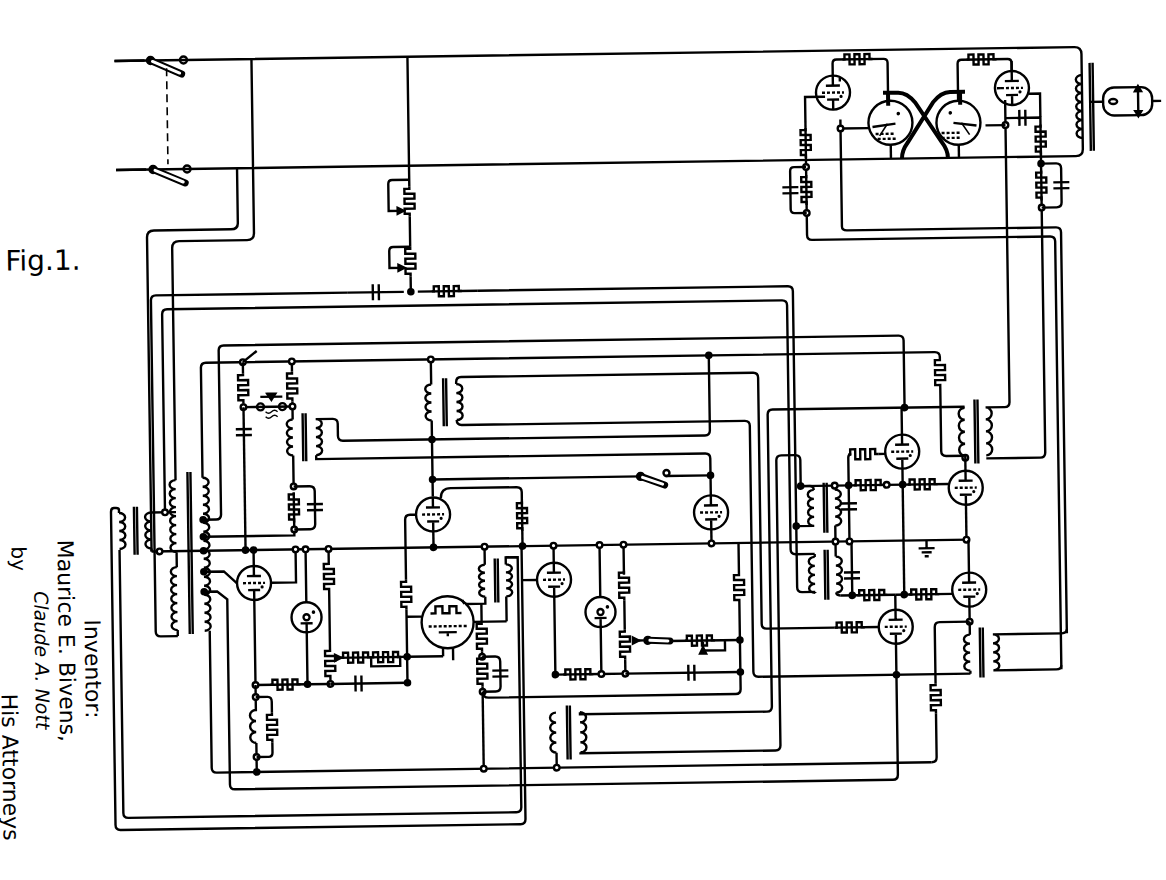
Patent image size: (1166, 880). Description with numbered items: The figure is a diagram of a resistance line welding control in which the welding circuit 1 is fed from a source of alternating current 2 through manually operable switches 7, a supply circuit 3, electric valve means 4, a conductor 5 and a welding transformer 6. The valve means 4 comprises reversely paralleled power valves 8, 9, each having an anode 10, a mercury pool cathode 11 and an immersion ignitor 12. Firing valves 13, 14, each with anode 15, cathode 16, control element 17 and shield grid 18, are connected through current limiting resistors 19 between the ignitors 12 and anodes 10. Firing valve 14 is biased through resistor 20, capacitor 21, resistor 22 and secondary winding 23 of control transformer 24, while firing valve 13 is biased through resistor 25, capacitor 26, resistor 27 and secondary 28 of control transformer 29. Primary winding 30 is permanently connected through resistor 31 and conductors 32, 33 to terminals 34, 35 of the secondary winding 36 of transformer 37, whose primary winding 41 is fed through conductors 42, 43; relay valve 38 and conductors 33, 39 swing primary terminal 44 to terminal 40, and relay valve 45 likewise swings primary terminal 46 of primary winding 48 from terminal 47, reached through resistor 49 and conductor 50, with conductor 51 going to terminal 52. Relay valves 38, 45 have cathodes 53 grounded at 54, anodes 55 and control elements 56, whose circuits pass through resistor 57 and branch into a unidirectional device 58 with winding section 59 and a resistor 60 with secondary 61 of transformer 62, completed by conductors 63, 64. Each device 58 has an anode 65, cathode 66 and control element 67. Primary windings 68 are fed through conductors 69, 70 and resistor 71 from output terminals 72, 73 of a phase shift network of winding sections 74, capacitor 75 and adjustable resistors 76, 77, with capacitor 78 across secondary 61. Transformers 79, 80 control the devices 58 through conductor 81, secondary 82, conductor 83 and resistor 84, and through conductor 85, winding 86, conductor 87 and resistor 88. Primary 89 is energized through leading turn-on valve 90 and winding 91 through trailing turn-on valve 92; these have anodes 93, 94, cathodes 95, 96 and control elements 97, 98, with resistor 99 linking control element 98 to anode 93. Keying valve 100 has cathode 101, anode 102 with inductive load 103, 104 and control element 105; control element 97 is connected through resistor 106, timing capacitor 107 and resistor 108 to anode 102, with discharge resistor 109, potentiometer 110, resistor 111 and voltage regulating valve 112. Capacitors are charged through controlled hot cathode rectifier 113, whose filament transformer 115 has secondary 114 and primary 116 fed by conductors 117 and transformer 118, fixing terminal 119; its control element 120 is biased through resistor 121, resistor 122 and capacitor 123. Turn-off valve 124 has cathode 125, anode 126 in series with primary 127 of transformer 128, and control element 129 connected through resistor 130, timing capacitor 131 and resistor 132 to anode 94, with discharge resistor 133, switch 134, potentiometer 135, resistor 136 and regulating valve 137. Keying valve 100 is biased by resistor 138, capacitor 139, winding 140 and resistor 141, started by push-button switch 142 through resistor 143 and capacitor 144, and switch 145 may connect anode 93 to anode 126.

The welding circuit 1 is at (1128, 94).
The source of alternating current 2 is at (131, 54).
The supply circuit 3 is at (597, 54).
The electric valve means 4 is at (932, 103).
The conductor 5 is at (992, 170).
The welding transformer 6 is at (1101, 160).
The manually operable switches 7 is at (184, 68).
The electric power valve 8 is at (884, 110).
The electric power valve 9 is at (968, 112).
The anode 10 is at (924, 113).
The mercury pool cathode 11 is at (922, 139).
The immersion ignitor-type control element 12 is at (990, 140).
The firing electric valve 13 is at (826, 88).
The firing electric valve 14 is at (1026, 86).
The anode 15 is at (1020, 60).
The cathode 16 is at (810, 110).
The control element 17 is at (824, 92).
The shield grid 18 is at (1004, 90).
The current limiting resistor 19 is at (966, 64).
The current limiting resistor 20 is at (1050, 132).
The capacitor 21 is at (1072, 190).
The resistor 22 is at (1038, 190).
The secondary winding 23 is at (992, 430).
The control transformer 24 is at (977, 404).
The current limiting resistor 25 is at (805, 143).
The capacitor 26 is at (790, 192).
The resistor 27 is at (816, 196).
The secondary winding 28 is at (1000, 656).
The control transformer 29 is at (985, 643).
The primary winding 30 is at (961, 440).
The resistor 31 is at (950, 378).
The conductor 32 is at (384, 357).
The conductor 33 is at (840, 340).
The terminal 34 is at (208, 474).
The terminal 35 is at (210, 514).
The secondary winding 36 is at (208, 490).
The transformer 37 is at (188, 464).
The relay electric valve 38 is at (983, 494).
The conductor 39 is at (584, 545).
The terminal 40 is at (208, 547).
The primary winding 41 is at (172, 626).
The conductor 42 is at (213, 269).
The conductor 43 is at (175, 226).
The primary terminal 44 is at (969, 466).
The relay electric valve 45 is at (976, 584).
The primary terminal 46 is at (962, 630).
The terminal 47 is at (200, 634).
The primary winding 48 is at (962, 663).
The resistor 49 is at (942, 702).
The conductor 50 is at (848, 767).
The conductor 51 is at (896, 694).
The terminal 52 is at (215, 590).
The cathode 53 is at (970, 576).
The ground 54 is at (938, 547).
The anode 55 is at (975, 484).
The control element 56 is at (976, 505).
The current limiting resistor 57 is at (926, 484).
The unidirectional current conducting device 58 is at (910, 446).
The winding section 59 is at (208, 532).
The resistor 60 is at (872, 492).
The secondary winding 61 is at (835, 488).
The transformer 62 is at (812, 488).
The conductor 63 is at (886, 534).
The conductor 64 is at (903, 574).
The anode 65 is at (896, 462).
The cathode 66 is at (898, 434).
The control element 67 is at (886, 452).
The primary winding 68 is at (800, 606).
The conductor 69 is at (616, 289).
The conductor 70 is at (618, 305).
The resistor 71 is at (462, 287).
The output terminal 72 is at (417, 288).
The output terminal 73 is at (162, 503).
The winding sections 74 is at (172, 476).
The capacitor 75 is at (374, 284).
The adjustable resistor 76 is at (420, 253).
The adjustable resistor 77 is at (420, 193).
The capacitor 78 is at (854, 510).
The transformer 79 is at (445, 378).
The transformer 80 is at (570, 754).
The conductor 81 is at (574, 422).
The secondary winding 82 is at (464, 400).
The conductor 83 is at (656, 376).
The current limiting resistor 84 is at (810, 634).
The conductor 85 is at (850, 410).
The primary winding 86 is at (583, 724).
The conductor 87 is at (746, 753).
The current limiting resistor 88 is at (848, 455).
The primary winding 89 is at (424, 404).
The leading turn-on electric valve 90 is at (450, 510).
The secondary winding 91 is at (546, 720).
The trailing turn-on electric valve 92 is at (556, 590).
The anode 93 is at (421, 497).
The anode 94 is at (544, 588).
The cathode 95 is at (440, 521).
The cathode 96 is at (558, 568).
The control element 97 is at (447, 500).
The control element 98 is at (566, 582).
The current limiting resistor 99 is at (528, 506).
The keying electric valve 100 is at (256, 596).
The cathode 101 is at (258, 568).
The anode 102 is at (264, 586).
The inductive load 103 is at (250, 740).
The inductive load 104 is at (278, 726).
The control element 105 is at (268, 576).
The current limiting resistor 106 is at (398, 594).
The timing capacitor 107 is at (354, 688).
The resistor 108 is at (292, 684).
The adjustable discharge resistor 109 is at (374, 648).
The adjustable potentiometer 110 is at (334, 646).
The resistor 111 is at (334, 564).
The voltage regulating valve 112 is at (300, 624).
The controlled hot cathode rectifier 113 is at (442, 592).
The secondary winding 114 is at (478, 576).
The filament heating transformer 115 is at (499, 604).
The primary winding 116 is at (503, 555).
The conductors 117 is at (320, 818).
The transformer 118 is at (138, 542).
The terminal 119 is at (408, 656).
The control element 120 is at (440, 660).
The current limiting resistor 121 is at (486, 632).
The resistor 122 is at (470, 684).
The capacitor 123 is at (497, 692).
The turn-off electric valve 124 is at (694, 514).
The cathode 125 is at (706, 524).
The anode 126 is at (714, 478).
The primary winding 127 is at (330, 442).
The transformer 128 is at (308, 460).
The control element 129 is at (704, 502).
The current limiting resistor 130 is at (732, 582).
The timing capacitor 131 is at (688, 682).
The resistor 132 is at (592, 678).
The adjustable discharge resistor 133 is at (694, 636).
The switch 134 is at (652, 636).
The adjustable potentiometer 135 is at (628, 654).
The resistor 136 is at (626, 571).
The voltage regulating valve 137 is at (590, 616).
The resistor 138 is at (290, 515).
The capacitor 139 is at (322, 503).
The primary winding 140 is at (290, 448).
The resistor 141 is at (300, 370).
The push-button switch 142 is at (268, 391).
The resistor 143 is at (258, 351).
The capacitor 144 is at (253, 428).
The switch 145 is at (645, 482).